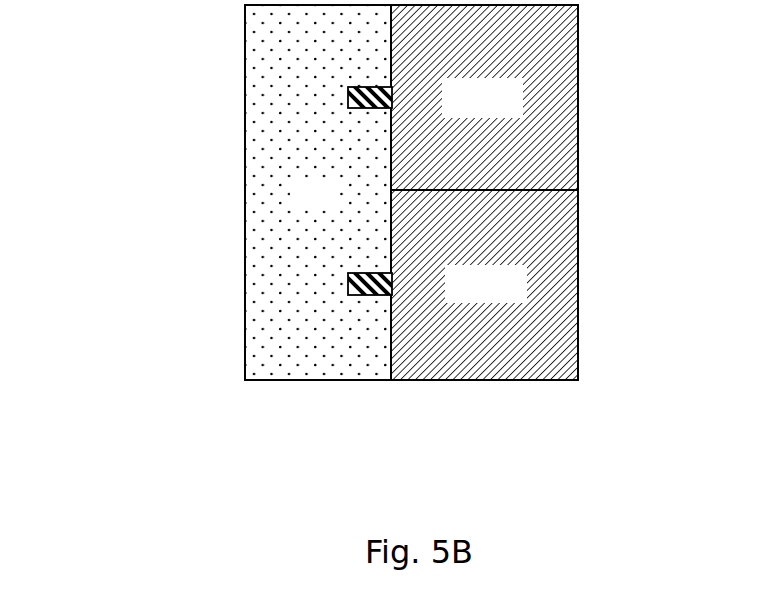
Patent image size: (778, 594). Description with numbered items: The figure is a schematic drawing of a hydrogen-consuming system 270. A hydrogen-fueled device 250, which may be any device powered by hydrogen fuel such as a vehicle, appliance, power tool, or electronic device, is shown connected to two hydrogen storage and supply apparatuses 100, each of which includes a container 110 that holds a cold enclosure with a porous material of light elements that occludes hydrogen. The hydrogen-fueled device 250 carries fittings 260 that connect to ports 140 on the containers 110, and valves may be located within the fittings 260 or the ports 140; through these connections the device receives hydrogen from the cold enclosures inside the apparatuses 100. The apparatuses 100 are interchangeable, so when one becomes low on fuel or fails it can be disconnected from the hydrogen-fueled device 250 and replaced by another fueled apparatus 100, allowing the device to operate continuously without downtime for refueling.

The hydrogen storage and supply apparatus 100 is at (598, 107).
The container 110 is at (484, 192).
The port 140 is at (251, 244).
The hydrogen-fueled device 250 is at (318, 192).
The fitting 260 is at (348, 108).
The hydrogen-consuming system 270 is at (223, 70).